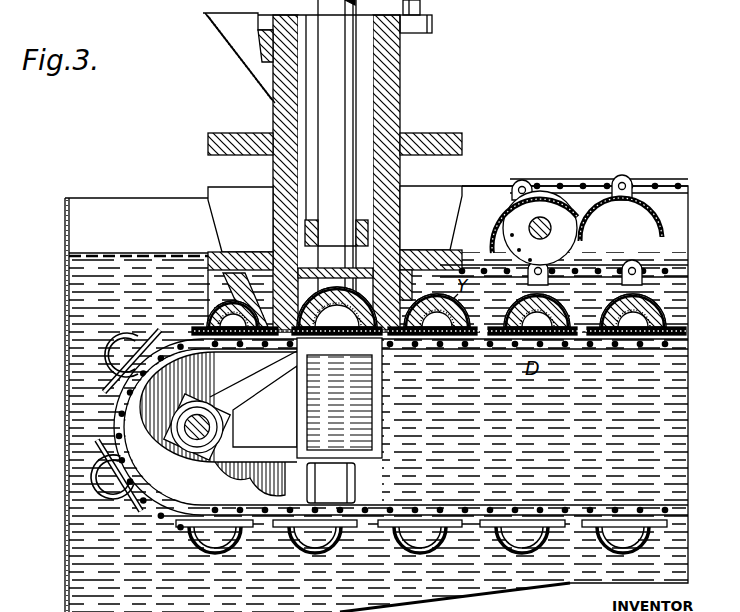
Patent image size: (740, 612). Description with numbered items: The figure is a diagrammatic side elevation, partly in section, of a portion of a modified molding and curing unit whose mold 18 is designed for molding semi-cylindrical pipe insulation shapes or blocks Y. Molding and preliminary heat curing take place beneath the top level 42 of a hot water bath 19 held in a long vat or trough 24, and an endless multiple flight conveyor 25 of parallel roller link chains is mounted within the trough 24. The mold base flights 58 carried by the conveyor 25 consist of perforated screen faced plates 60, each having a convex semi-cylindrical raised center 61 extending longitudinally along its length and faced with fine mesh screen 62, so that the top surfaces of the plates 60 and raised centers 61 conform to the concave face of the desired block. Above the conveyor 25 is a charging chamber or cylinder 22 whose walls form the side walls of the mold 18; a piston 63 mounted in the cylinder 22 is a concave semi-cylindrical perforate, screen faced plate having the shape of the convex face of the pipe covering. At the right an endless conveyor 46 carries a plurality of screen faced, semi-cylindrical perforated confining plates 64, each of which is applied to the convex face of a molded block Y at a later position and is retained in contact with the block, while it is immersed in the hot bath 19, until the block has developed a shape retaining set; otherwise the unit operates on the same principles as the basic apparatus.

The mold 18 is at (415, 226).
The water bath 19 is at (378, 432).
The charging chamber or cylinder 22 is at (372, 118).
The vat or trough 24 is at (65, 272).
The endless multiple flight conveyor 25 is at (493, 348).
The top level 42 is at (119, 254).
The endless conveyor 46 is at (592, 181).
The mold base flights 58 is at (350, 542).
The perforated screen faced plates 60 is at (200, 327).
The convex semi-cylindrical raised center 61 is at (296, 298).
The fine mesh screen 62 is at (228, 300).
The piston 63 is at (305, 290).
The confining plates 64 is at (652, 216).